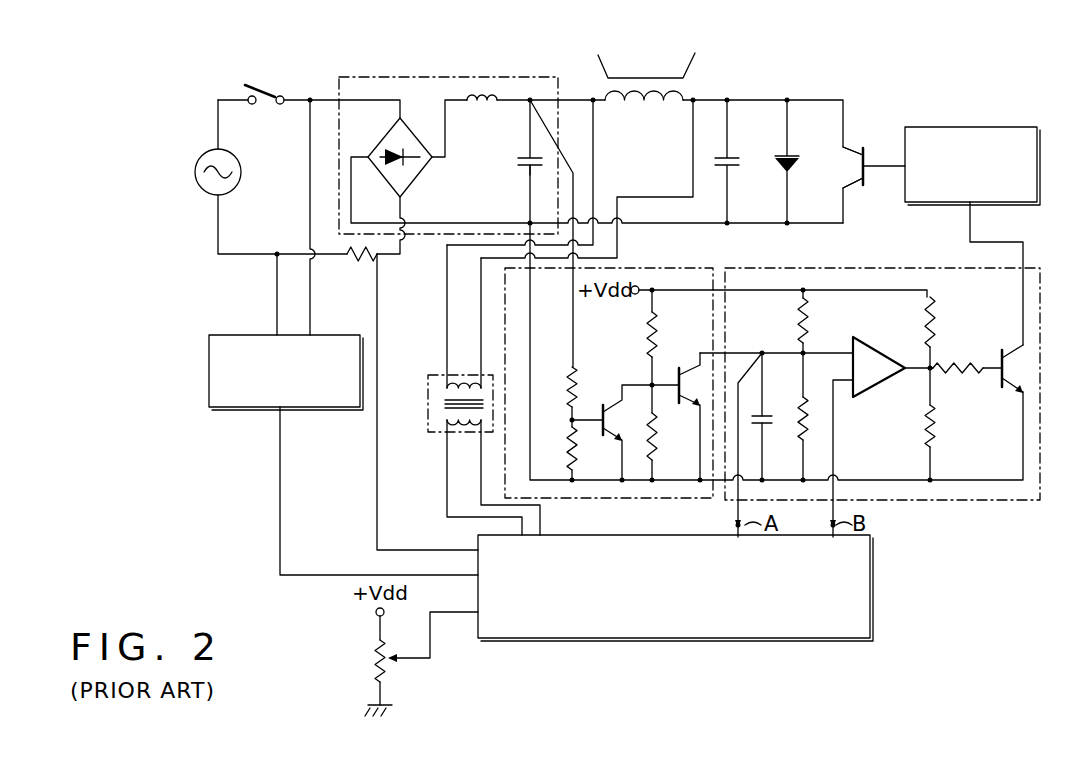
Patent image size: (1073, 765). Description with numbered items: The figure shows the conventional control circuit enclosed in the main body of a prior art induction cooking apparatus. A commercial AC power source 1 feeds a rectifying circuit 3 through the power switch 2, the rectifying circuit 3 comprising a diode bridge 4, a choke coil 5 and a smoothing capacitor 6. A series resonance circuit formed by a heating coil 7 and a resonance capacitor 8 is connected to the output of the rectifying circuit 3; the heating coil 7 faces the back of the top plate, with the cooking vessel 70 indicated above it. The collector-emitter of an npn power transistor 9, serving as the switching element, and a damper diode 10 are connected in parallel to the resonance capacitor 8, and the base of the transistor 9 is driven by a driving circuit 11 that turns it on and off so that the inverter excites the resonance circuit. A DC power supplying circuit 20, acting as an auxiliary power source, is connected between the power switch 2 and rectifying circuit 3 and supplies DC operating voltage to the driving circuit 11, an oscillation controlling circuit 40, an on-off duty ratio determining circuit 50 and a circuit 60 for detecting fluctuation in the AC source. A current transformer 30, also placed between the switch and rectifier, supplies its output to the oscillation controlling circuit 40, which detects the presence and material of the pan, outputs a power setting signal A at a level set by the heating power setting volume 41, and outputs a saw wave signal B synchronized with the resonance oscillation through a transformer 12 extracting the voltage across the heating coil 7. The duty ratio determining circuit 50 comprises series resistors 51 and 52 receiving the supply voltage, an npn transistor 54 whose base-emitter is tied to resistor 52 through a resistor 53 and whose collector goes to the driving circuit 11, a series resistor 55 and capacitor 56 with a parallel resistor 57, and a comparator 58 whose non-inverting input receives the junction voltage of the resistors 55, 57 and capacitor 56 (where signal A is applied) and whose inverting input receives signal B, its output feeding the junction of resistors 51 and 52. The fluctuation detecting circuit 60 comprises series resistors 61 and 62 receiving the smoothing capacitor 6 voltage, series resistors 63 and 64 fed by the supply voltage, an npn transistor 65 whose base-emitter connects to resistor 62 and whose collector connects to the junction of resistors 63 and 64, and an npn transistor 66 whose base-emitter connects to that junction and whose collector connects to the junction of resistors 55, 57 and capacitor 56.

The commercial AC power source 1 is at (242, 172).
The power switch 2 is at (263, 84).
The rectifying circuit 3 is at (441, 77).
The diode bridge 4 is at (418, 178).
The choke coil 5 is at (488, 107).
The smoothing capacitor 6 is at (517, 167).
The heating coil 7 is at (642, 108).
The cooking vessel 70 is at (697, 62).
The resonance capacitor 8 is at (735, 150).
The npn transistor (power transistor) 9 is at (855, 150).
The damper diode 10 is at (795, 150).
The driving circuit 11 is at (968, 127).
The transformer 12 is at (427, 405).
The DC power supplying circuit 20 is at (208, 372).
The current transformer 30 is at (380, 258).
The oscillation controlling circuit 40 is at (873, 580).
The heating power setting volume 41 is at (368, 658).
The on-off duty ratio determining circuit 50 is at (860, 268).
The resistor 51 is at (940, 326).
The resistor 52 is at (924, 436).
The resistor 53 is at (968, 378).
The npn transistor 54 is at (1003, 353).
The resistor 55 is at (798, 321).
The capacitor 56 is at (766, 414).
The resistor 57 is at (797, 438).
The comparator (operational amplifier) 58 is at (876, 351).
The circuit for detecting a fluctuation in the AC power source 60 is at (650, 268).
The resistor 61 is at (567, 386).
The resistor 62 is at (567, 449).
The resistor 63 is at (647, 333).
The resistor 64 is at (657, 444).
The npn transistor 65 is at (604, 393).
The npn transistor 66 is at (681, 362).